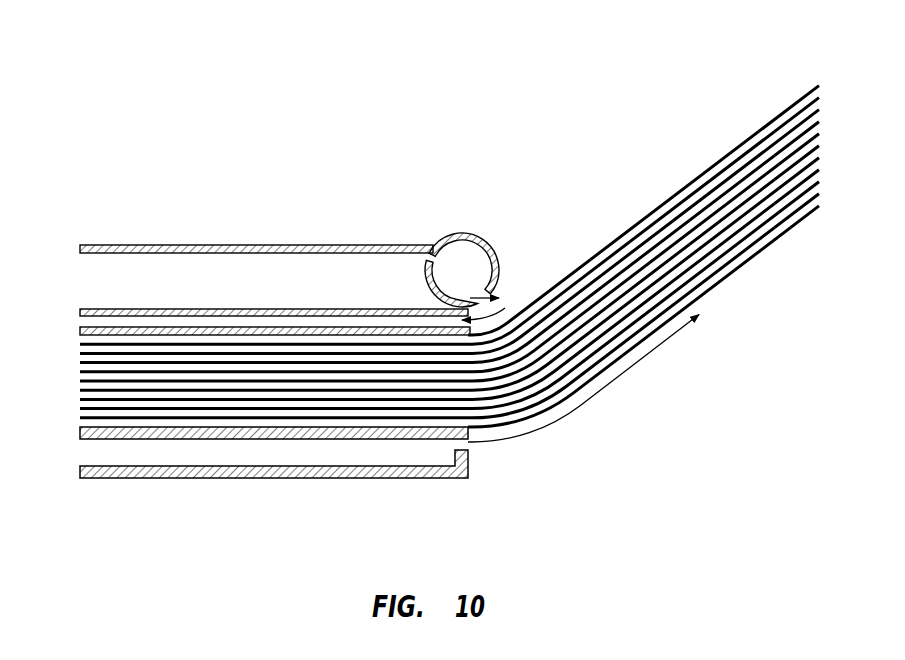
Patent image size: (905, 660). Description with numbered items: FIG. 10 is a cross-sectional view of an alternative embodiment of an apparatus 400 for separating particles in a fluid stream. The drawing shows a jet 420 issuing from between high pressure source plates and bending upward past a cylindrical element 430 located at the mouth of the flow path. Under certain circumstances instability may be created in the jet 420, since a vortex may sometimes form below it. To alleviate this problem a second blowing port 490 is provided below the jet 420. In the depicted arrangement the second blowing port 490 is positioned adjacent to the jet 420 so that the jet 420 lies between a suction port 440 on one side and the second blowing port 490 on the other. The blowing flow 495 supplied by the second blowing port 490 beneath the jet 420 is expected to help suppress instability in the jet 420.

The fluid flow control system 400 is at (272, 208).
The jet 420 is at (633, 242).
The cylindrical roller 430 is at (496, 292).
The suction port 440 is at (466, 321).
The second blowing port 490 is at (468, 443).
The blowing flow 495 is at (585, 397).